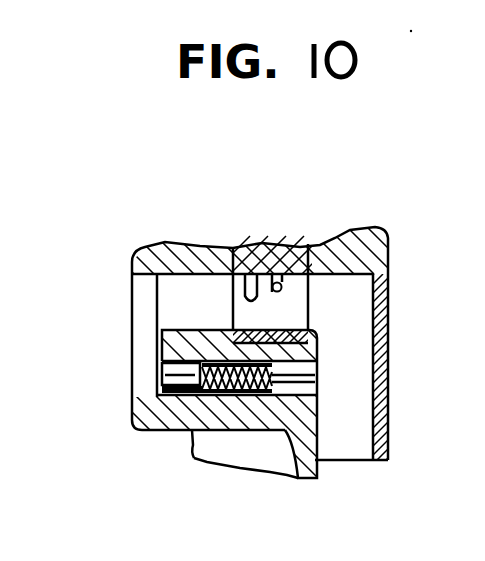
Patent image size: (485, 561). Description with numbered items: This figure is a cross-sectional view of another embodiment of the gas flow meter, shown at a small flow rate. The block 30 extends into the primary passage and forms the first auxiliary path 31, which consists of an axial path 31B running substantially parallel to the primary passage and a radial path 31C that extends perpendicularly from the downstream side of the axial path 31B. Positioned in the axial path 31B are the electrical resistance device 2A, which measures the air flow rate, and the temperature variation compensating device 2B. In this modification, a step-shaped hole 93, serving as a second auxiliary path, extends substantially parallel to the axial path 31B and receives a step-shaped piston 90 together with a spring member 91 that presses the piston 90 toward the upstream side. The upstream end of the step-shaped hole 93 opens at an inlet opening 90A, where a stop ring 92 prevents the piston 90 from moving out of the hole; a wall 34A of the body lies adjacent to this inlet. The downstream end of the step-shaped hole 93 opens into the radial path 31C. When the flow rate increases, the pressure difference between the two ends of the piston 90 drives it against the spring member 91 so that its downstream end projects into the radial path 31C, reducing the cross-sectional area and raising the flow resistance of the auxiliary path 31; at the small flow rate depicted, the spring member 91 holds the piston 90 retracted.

The first auxiliary path 31 is at (342, 298).
The axial path 31B is at (182, 297).
The radial path 31C is at (333, 417).
The housing side wall 34A is at (162, 305).
The electrical resistance device 2A is at (243, 240).
The temperature variation compensating device 2B is at (266, 250).
The inlet opening 90A is at (162, 364).
The step-shaped piston 90 is at (162, 382).
The stop ring 92 is at (173, 412).
The spring member 91 is at (221, 400).
The block 30 is at (262, 398).
The step-shaped hole 93 is at (284, 408).